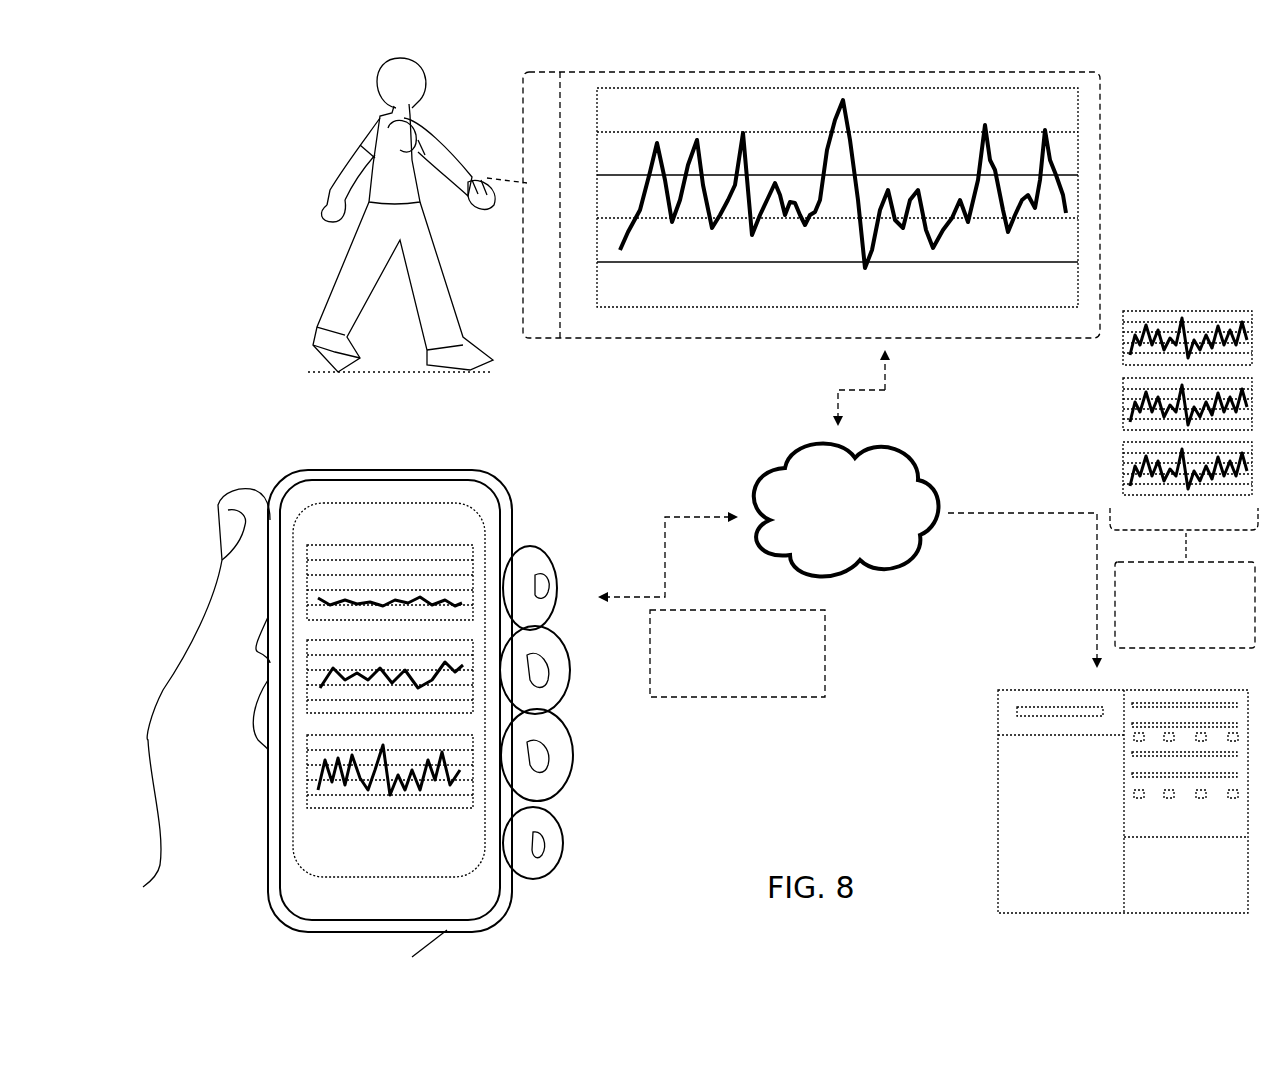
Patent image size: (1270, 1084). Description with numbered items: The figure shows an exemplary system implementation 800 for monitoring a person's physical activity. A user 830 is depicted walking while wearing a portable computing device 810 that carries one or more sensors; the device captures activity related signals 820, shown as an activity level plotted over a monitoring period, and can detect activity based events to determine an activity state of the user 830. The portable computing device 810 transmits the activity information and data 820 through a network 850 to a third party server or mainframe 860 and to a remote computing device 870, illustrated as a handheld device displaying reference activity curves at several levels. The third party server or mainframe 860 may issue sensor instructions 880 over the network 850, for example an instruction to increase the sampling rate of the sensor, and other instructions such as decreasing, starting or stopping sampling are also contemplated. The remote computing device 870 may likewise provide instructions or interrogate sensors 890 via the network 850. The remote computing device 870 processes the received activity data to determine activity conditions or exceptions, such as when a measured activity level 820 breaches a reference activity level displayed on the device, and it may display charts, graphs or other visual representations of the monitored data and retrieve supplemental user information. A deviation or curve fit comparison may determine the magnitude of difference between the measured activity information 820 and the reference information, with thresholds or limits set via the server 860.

The system implementation 800 is at (244, 104).
The portable computing device 810 is at (1090, 337).
The activity related signals 820 is at (1070, 299).
The user 830 is at (412, 231).
The network 850 is at (860, 534).
The third party server or mainframe 860 is at (1235, 906).
The remote computing device 870 is at (485, 904).
The sensor instructions 880 is at (1202, 641).
The interrogate sensors 890 is at (758, 691).